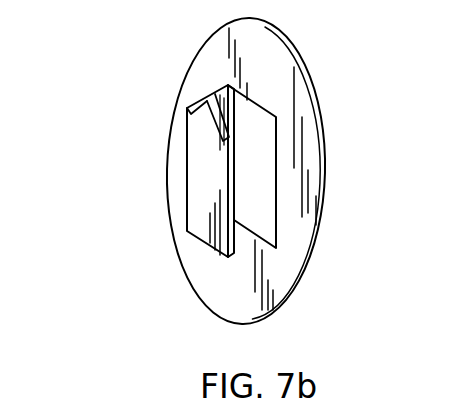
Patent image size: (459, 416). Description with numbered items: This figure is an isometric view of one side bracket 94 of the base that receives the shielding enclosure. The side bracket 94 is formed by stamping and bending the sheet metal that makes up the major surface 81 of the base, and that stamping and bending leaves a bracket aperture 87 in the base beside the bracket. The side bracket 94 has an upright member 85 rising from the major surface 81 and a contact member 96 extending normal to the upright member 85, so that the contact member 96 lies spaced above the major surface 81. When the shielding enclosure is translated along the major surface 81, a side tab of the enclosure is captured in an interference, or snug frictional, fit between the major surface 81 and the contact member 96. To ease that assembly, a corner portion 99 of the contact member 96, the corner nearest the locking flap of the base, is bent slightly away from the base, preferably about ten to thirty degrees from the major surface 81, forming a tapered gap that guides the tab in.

The side bracket 94 is at (127, 48).
The major surface 81 is at (278, 97).
The upright member 85 is at (207, 91).
The bracket aperture 87 is at (245, 182).
The contact member 96 is at (207, 180).
The corner portion 99 is at (215, 145).